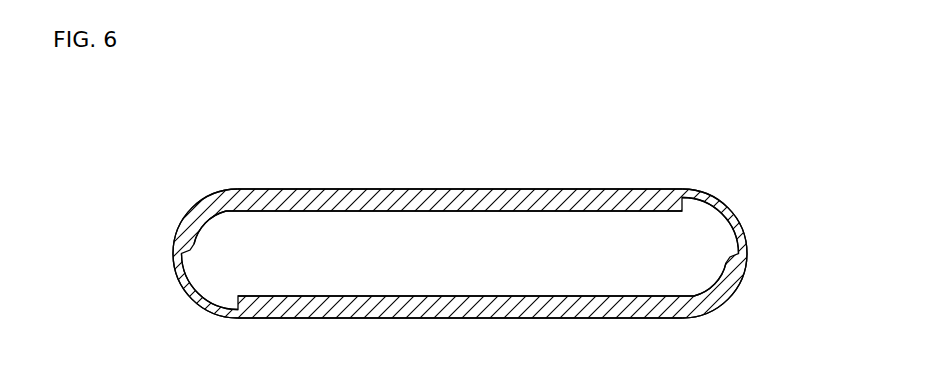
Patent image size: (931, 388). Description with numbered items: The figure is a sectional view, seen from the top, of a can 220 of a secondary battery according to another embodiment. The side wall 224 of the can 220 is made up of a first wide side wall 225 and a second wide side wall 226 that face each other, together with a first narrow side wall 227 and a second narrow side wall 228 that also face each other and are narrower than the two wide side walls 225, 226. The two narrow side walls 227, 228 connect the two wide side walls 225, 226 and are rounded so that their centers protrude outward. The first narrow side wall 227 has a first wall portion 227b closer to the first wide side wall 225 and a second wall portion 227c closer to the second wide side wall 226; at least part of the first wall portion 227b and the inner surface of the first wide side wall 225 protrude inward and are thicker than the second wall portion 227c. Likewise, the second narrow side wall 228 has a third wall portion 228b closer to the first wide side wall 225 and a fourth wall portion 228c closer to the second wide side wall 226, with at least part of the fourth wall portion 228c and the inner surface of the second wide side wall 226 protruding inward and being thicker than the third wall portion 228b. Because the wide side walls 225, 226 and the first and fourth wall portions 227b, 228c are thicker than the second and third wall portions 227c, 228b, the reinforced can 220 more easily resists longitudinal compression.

The can 220 is at (158, 134).
The side wall 224 is at (596, 184).
The first wide side wall 225 is at (418, 195).
The second wide side wall 226 is at (326, 318).
The first narrow side wall 227 is at (173, 249).
The first wall portion 227b is at (193, 213).
The second wall portion 227c is at (185, 296).
The second narrow side wall 228 is at (747, 260).
The third wall portion 228b is at (732, 216).
The fourth wall portion 228c is at (723, 290).